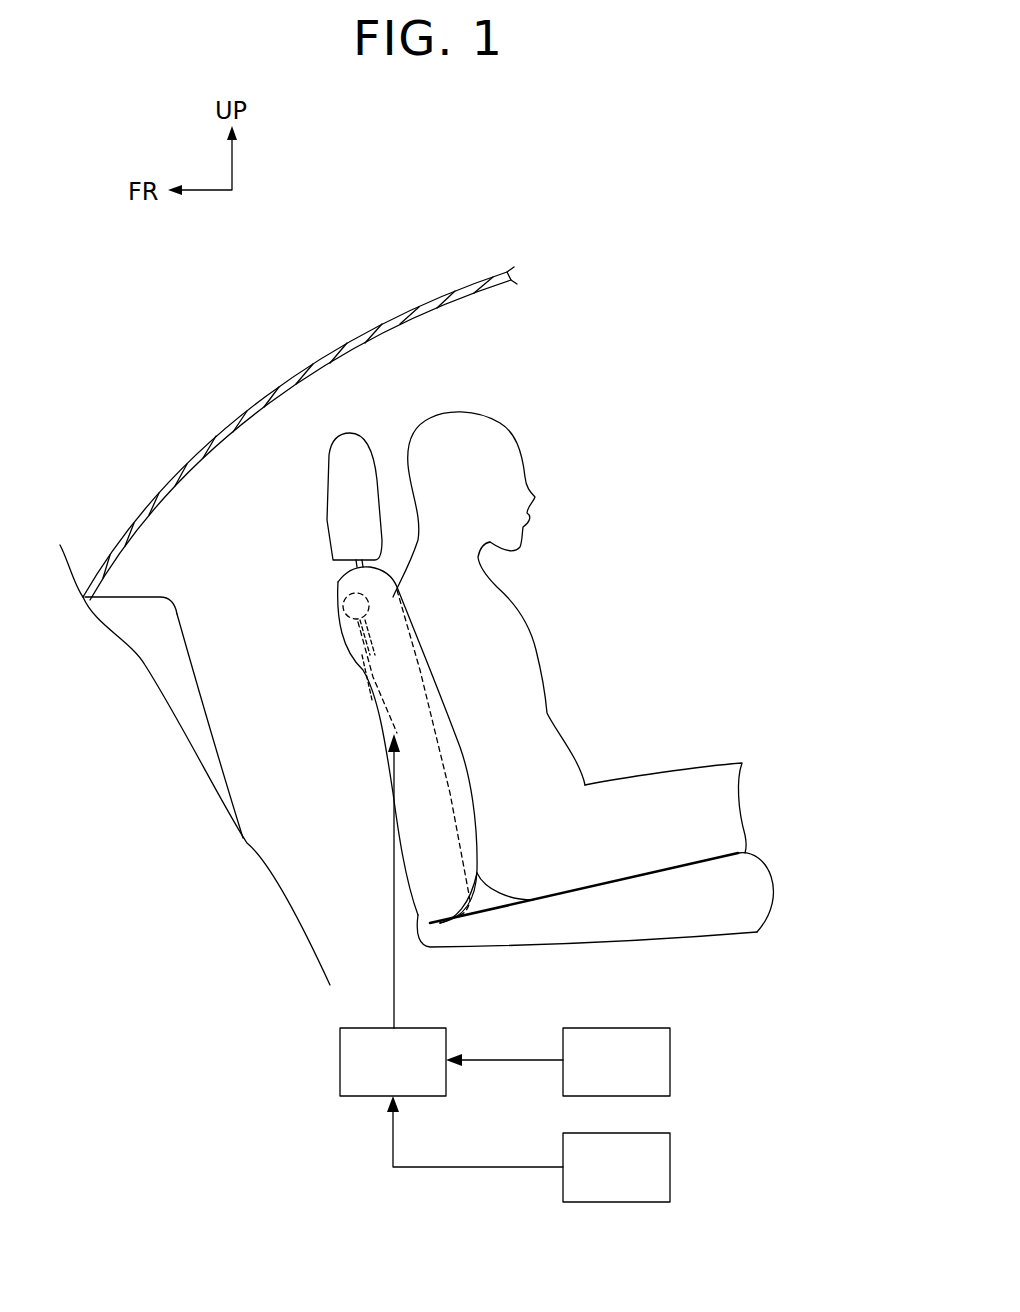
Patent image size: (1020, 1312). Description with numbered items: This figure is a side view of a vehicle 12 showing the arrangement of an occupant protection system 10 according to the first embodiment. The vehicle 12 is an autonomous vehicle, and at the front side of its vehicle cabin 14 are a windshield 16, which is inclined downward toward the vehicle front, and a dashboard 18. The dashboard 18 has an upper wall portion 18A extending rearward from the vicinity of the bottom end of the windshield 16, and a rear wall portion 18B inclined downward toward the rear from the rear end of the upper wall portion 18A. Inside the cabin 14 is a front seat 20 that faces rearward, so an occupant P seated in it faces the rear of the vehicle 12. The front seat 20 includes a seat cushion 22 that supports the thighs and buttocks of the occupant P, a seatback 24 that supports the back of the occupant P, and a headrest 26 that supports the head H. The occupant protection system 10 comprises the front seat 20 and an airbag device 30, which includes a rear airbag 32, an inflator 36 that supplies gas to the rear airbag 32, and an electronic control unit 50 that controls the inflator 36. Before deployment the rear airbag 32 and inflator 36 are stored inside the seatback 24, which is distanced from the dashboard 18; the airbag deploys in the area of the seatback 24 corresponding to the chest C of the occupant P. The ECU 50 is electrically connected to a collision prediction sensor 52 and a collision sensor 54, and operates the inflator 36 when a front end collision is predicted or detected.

The occupant protection system 10 is at (302, 498).
The vehicle 12 is at (96, 334).
The vehicle cabin 14 is at (434, 346).
The front windshield glass 16 is at (477, 283).
The dashboard 18 is at (261, 556).
The upper wall portion 18A is at (137, 592).
The rear wall portion 18B is at (191, 662).
The front seat 20 is at (470, 741).
The seat cushion 22 is at (750, 907).
The seatback 24 is at (442, 877).
The headrest 26 is at (351, 450).
The airbag device 30 is at (362, 688).
The rear airbag 32 is at (350, 585).
The inflator 36 is at (380, 725).
The electronic control unit (ECU) 50 is at (420, 1027).
The collision prediction sensor 52 is at (650, 1027).
The collision sensor 54 is at (653, 1133).
The head H is at (499, 442).
The occupant P is at (540, 484).
The chest C is at (525, 633).